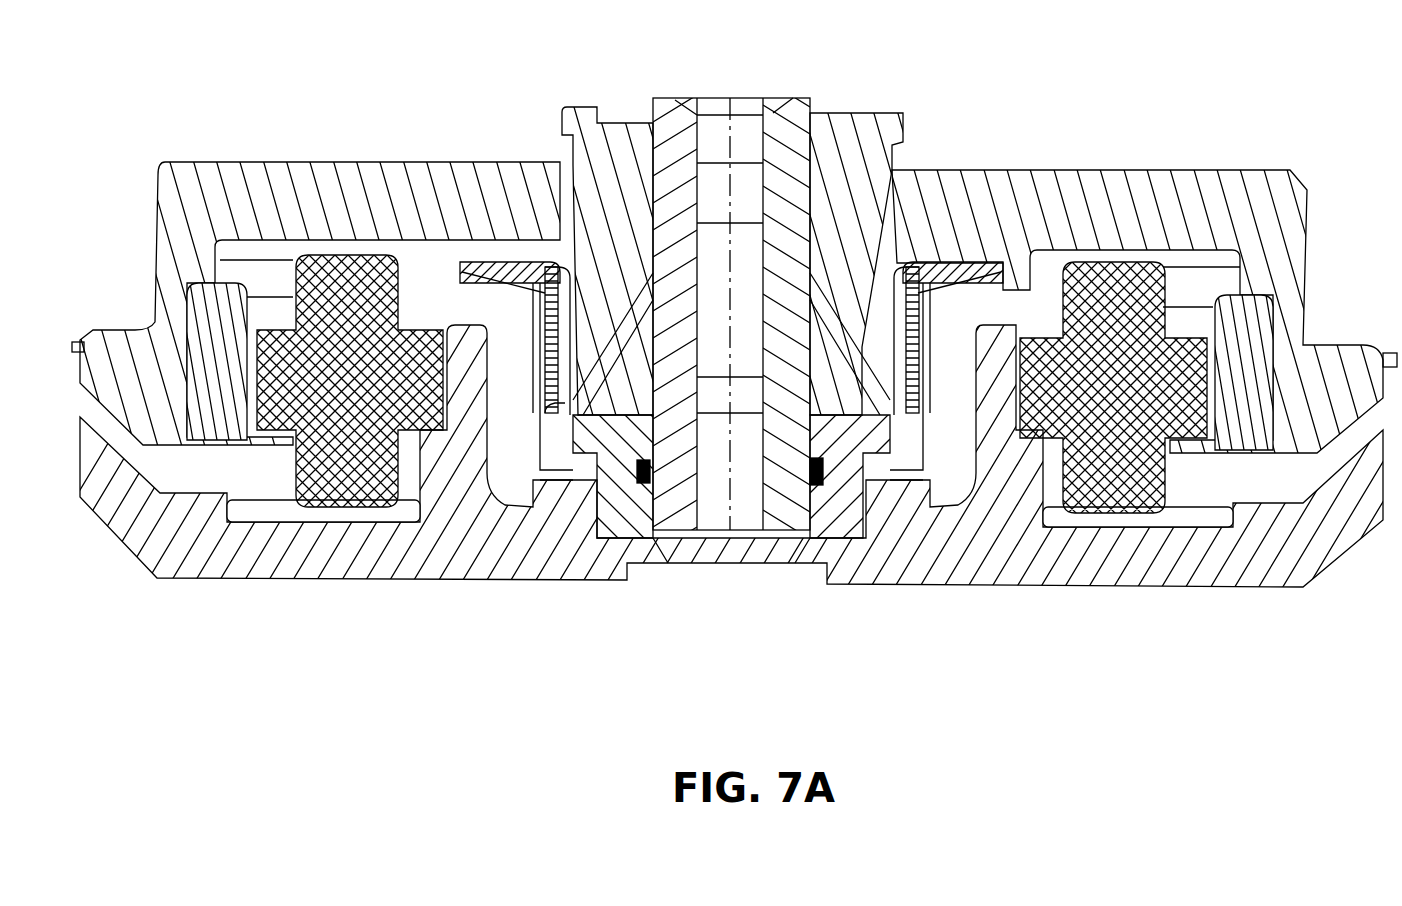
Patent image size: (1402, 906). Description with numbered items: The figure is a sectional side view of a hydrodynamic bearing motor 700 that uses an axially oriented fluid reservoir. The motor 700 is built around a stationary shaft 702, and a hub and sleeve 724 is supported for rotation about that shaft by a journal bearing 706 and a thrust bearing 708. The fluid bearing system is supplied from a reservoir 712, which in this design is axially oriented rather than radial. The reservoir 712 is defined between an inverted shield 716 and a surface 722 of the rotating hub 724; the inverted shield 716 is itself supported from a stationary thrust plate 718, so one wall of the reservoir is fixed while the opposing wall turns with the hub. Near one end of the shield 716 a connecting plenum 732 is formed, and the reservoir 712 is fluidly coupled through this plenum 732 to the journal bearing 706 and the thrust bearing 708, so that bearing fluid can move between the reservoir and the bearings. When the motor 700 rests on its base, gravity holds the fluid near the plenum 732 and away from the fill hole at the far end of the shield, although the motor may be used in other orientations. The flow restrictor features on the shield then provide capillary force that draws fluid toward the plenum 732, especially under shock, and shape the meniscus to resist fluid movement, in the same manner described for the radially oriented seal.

The motor 700 is at (1192, 86).
The stationary shaft 702 is at (781, 470).
The journal bearing 706 is at (650, 215).
The thrust bearing 708 is at (882, 480).
The reservoir 712 is at (540, 375).
The inverted shield 716 is at (545, 440).
The stationary thrust plate 718 is at (815, 488).
The surface of rotating hub 722 is at (557, 330).
The hub and sleeve 724 is at (252, 173).
The plenum 732 is at (577, 420).